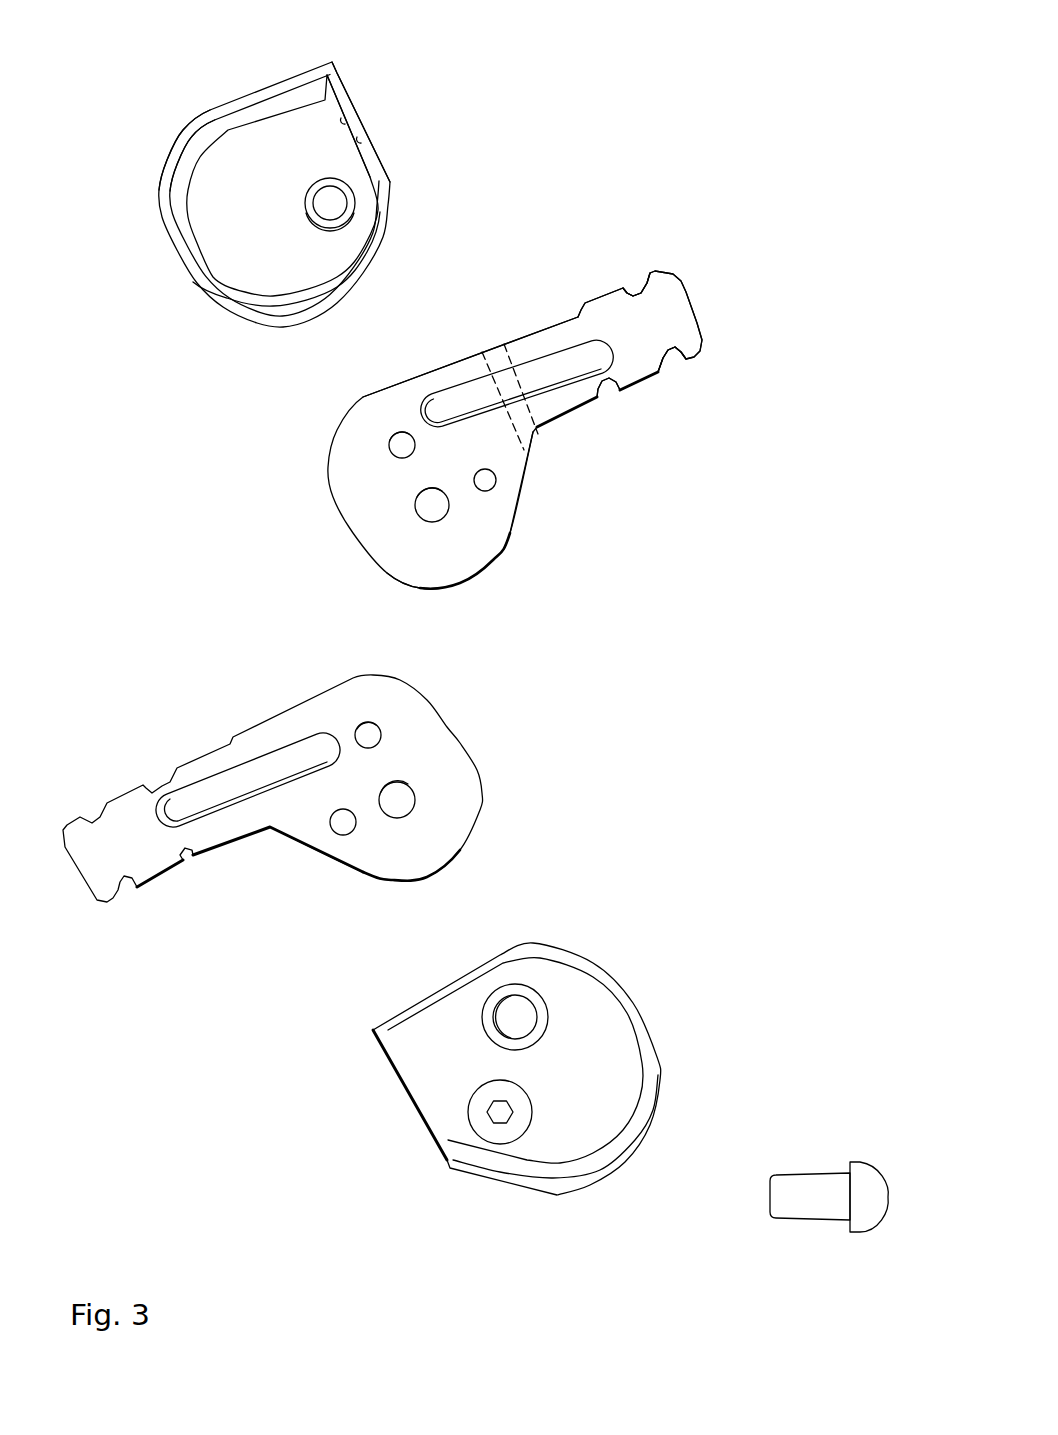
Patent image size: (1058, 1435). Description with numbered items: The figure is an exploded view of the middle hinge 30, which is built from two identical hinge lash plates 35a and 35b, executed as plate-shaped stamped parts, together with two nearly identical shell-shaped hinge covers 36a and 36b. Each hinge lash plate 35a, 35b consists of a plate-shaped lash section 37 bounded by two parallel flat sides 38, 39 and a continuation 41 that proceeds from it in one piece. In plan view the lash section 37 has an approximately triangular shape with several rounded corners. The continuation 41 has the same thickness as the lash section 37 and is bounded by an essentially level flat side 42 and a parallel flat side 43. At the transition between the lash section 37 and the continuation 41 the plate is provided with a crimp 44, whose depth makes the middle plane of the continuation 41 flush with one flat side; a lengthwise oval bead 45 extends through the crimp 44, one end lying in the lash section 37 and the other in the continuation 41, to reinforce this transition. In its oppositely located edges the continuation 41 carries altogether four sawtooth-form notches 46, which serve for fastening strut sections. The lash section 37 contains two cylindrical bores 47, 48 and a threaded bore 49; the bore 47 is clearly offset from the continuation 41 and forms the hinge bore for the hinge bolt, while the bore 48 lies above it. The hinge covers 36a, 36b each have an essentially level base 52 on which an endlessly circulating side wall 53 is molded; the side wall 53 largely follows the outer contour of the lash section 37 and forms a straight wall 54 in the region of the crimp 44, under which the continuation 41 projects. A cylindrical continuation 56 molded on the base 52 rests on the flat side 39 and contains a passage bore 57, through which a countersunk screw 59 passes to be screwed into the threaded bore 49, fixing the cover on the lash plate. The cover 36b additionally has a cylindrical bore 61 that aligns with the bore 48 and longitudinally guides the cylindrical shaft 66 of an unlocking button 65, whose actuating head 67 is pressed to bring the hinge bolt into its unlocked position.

The hinge 30 is at (797, 56).
The hinge lash plate 35a is at (574, 535).
The hinge lash plate 35b is at (548, 758).
The hinge cover 36a is at (172, 66).
The hinge cover 36b is at (581, 1260).
The lash section 37 is at (345, 535).
The flat side 38 is at (462, 562).
The flat side 39 is at (440, 592).
The continuation 41 is at (569, 290).
The flat side 42 is at (629, 344).
The flat side 43 is at (659, 376).
The crimp 44 is at (507, 346).
The bead 45 is at (568, 375).
The notches 46 is at (644, 280).
The cylindrical bore 47 is at (427, 508).
The cylindrical bore 48 is at (402, 446).
The threaded bore 49 is at (497, 480).
The base 52 is at (249, 204).
The side wall 53 is at (213, 300).
The straight wall 54 is at (348, 118).
The cylindrical continuation 56 is at (350, 203).
The passage bore 57 is at (345, 198).
The countersunk screw 59 is at (507, 1123).
The cylindrical bore 61 is at (522, 1012).
The unlocking button 65 is at (895, 1093).
The cylindrical shaft 66 is at (793, 1188).
The actuating head 67 is at (877, 1202).